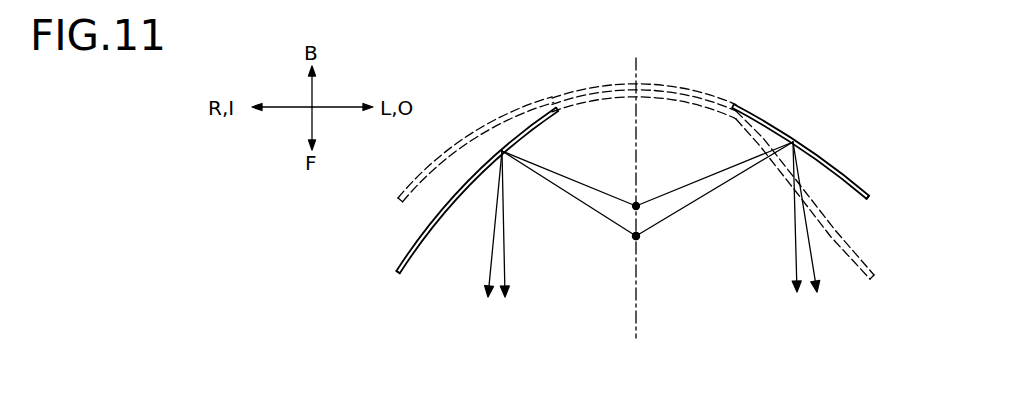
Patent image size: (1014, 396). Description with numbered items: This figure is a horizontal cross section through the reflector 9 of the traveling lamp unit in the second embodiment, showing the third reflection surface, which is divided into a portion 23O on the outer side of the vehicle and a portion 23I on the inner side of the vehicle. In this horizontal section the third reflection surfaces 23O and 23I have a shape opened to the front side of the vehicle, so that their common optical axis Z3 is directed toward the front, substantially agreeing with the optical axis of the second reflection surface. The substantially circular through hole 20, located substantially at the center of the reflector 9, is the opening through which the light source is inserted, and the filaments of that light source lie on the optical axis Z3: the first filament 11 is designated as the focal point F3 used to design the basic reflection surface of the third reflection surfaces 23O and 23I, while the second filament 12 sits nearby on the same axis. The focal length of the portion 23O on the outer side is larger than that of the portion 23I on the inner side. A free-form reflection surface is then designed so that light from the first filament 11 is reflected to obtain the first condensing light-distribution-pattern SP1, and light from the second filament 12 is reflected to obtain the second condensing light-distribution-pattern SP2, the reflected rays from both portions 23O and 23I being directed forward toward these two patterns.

The reflector 9 is at (407, 250).
The through hole 20 is at (554, 109).
The first filament 11 is at (642, 232).
The second filament 12 is at (639, 200).
The focal point F3 is at (641, 239).
The first condensing light-distribution-pattern SP1 is at (486, 268).
The second condensing light-distribution-pattern SP2 is at (508, 270).
The optical axis of the third reflection surfaces Z3 is at (637, 200).
The third reflection surface portion on the inner side of the vehicle 23I is at (399, 278).
The third reflection surface portion on the outer side of the vehicle 23O is at (860, 200).